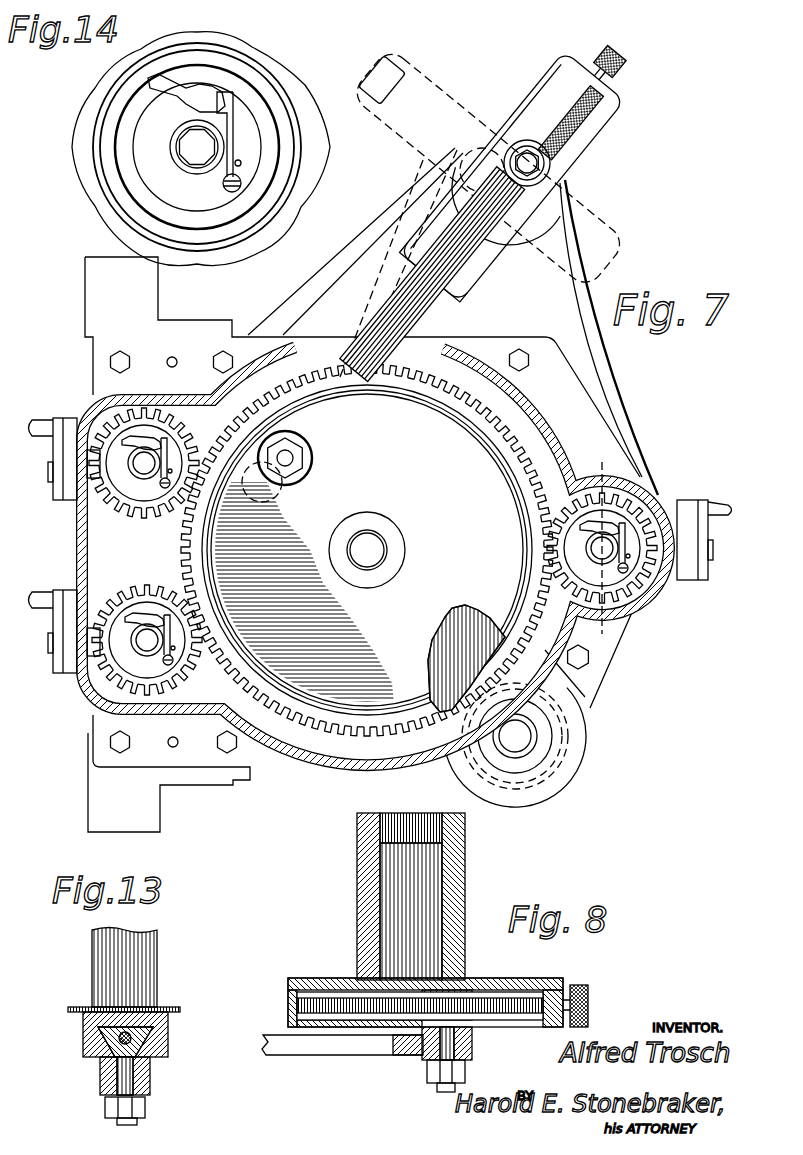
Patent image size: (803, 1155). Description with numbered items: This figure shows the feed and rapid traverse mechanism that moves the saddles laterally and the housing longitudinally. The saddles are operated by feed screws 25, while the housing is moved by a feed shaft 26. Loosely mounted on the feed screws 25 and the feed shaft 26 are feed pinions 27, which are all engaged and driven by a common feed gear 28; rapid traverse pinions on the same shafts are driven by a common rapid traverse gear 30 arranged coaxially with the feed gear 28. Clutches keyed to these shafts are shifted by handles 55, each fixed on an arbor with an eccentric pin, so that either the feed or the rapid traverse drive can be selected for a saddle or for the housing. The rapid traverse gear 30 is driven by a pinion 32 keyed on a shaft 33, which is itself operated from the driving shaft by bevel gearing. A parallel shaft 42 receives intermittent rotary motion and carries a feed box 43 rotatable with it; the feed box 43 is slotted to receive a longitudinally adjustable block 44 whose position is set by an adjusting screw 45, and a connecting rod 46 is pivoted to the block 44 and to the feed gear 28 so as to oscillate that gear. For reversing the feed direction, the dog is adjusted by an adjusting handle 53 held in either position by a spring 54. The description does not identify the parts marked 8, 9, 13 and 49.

In FIG. 7, the adjusting knob 8 is at (619, 55).
In FIG. 7, the nut 9 is at (424, 550).
In FIG. 7, the motor 13 is at (445, 128).
In FIG. 7, the feed screws 25 is at (135, 485).
In FIG. 14, the feed shaft 26 is at (192, 158).
In FIG. 7, the feed shaft 26 is at (590, 552).
In FIG. 14, the feed pinions 27 is at (280, 176).
In FIG. 7, the feed pinions 27 is at (149, 597).
In FIG. 7, the feed gear 28 is at (352, 740).
In FIG. 7, the rapid traverse gear 30 is at (445, 715).
In FIG. 7, the pinion 32 is at (560, 762).
In FIG. 7, the shaft 33 is at (522, 740).
In FIG. 8, the shaft 42 is at (400, 897).
In FIG. 7, the feed box 43 is at (594, 133).
In FIG. 13, the feed box 43 is at (168, 1032).
In FIG. 8, the feed box 43 is at (520, 982).
In FIG. 7, the block 44 is at (540, 172).
In FIG. 13, the block 44 is at (98, 1040).
In FIG. 8, the block 44 is at (462, 1027).
In FIG. 7, the adjusting screw 45 is at (597, 99).
In FIG. 13, the adjusting screw 45 is at (155, 1047).
In FIG. 8, the adjusting screw 45 is at (478, 998).
In FIG. 7, the connecting rod 46 is at (470, 290).
In FIG. 13, the connecting rod 46 is at (150, 1085).
In FIG. 8, the connecting rod 46 is at (370, 1048).
In FIG. 14, the face 49 is at (262, 200).
In FIG. 14, the adjusting handle 53 is at (188, 102).
In FIG. 7, the adjusting handle 53 is at (592, 523).
In FIG. 14, the spring 54 is at (233, 128).
In FIG. 7, the spring 54 is at (625, 522).
In FIG. 7, the handle 55 is at (42, 428).